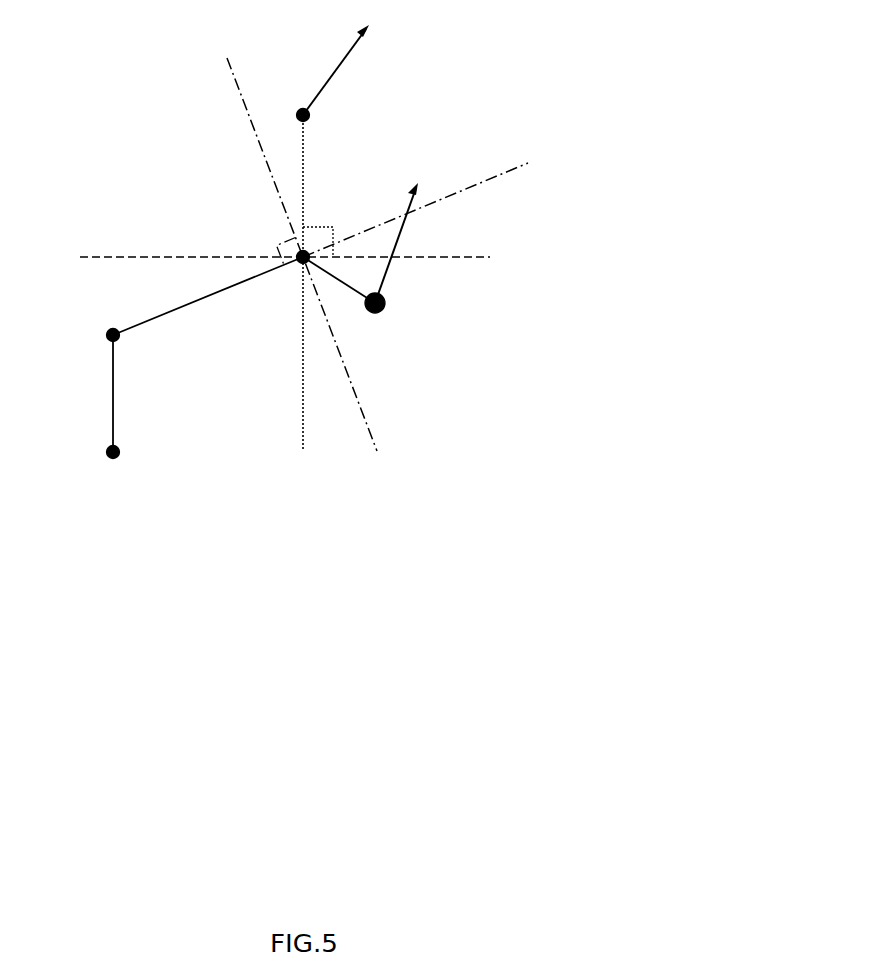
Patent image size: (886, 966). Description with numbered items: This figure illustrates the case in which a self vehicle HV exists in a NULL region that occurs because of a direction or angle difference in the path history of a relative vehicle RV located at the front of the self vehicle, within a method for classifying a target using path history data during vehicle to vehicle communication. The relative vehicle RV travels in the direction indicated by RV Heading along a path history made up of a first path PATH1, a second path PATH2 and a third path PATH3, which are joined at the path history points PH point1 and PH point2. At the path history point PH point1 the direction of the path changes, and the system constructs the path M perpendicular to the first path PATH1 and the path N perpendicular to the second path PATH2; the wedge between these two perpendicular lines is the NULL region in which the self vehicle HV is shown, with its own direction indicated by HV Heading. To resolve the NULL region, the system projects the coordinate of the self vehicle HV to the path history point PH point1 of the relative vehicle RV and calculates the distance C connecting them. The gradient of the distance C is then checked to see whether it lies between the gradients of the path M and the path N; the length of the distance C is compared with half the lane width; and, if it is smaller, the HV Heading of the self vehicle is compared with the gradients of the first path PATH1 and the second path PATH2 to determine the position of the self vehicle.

The path perpendicular to the first path M is at (285, 241).
The path perpendicular to the second path N is at (294, 254).
The first path PATH1 is at (307, 175).
The second path PATH2 is at (153, 318).
The third path PATH3 is at (111, 392).
The path history point PH point1 is at (249, 277).
The path history point PH point2 is at (173, 394).
The distance C is at (339, 280).
The relative vehicle RV is at (325, 114).
The relative vehicle heading RV Heading is at (382, 61).
The self vehicle HV is at (395, 300).
The self vehicle heading HV Heading is at (460, 243).